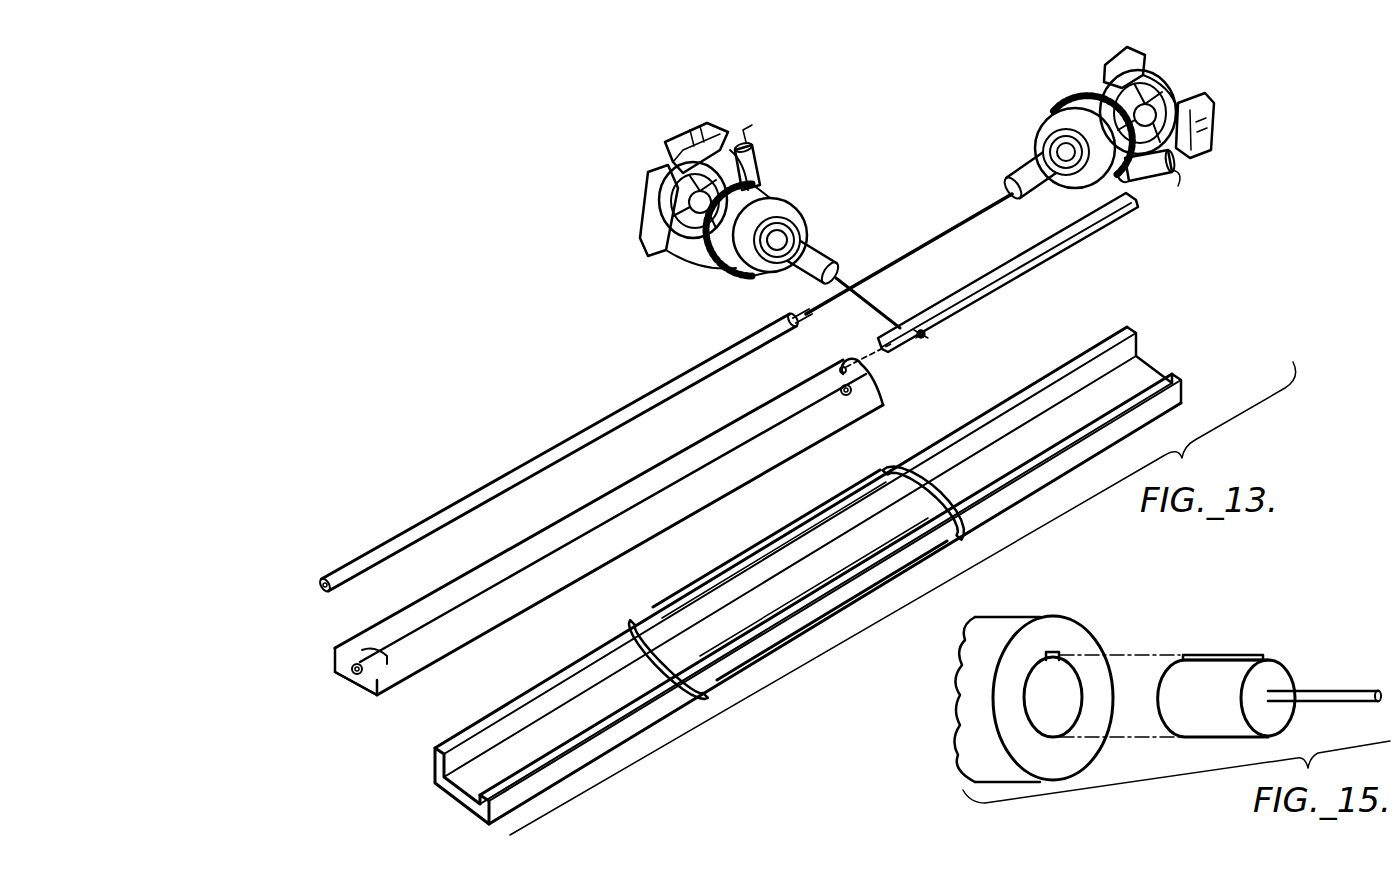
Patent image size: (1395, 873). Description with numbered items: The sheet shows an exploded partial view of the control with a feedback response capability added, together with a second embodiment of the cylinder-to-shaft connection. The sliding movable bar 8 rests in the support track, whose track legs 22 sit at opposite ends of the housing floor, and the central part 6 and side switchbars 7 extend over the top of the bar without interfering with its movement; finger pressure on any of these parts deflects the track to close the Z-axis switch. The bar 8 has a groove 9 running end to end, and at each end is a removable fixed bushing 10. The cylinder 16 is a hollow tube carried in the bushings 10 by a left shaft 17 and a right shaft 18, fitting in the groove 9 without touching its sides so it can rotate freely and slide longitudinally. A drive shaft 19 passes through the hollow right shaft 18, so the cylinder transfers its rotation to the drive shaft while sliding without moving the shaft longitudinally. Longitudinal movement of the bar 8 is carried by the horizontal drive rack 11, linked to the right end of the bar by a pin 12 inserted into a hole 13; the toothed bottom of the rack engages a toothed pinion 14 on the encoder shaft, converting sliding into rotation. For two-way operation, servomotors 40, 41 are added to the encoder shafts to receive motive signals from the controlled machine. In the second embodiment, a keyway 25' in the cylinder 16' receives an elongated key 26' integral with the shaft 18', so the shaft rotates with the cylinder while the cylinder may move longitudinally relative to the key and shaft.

In FIG. 13, the central part 6 is at (775, 548).
In FIG. 13, the side switchbar 7 is at (897, 470).
In FIG. 13, the sliding movable bar 8 is at (338, 667).
In FIG. 13, the groove 9 is at (465, 612).
In FIG. 13, the removable fixed bushing 10 is at (356, 676).
In FIG. 13, the horizontal drive rack 11 is at (1040, 282).
In FIG. 13, the pin 12 is at (890, 345).
In FIG. 13, the hole 13 is at (845, 366).
In FIG. 13, the toothed pinion 14 is at (922, 336).
In FIG. 13, the cylinder 16 is at (559, 452).
In FIG. 13, the left shaft 17 is at (314, 592).
In FIG. 13, the right shaft 18 is at (773, 307).
In FIG. 13, the drive shaft 19 is at (916, 250).
In FIG. 15, the drive shaft 19 is at (1337, 688).
In FIG. 13, the track leg 22 is at (1190, 405).
In FIG. 13, the servomotor 40 is at (748, 138).
In FIG. 13, the servomotor 41 is at (1110, 60).
In FIG. 15, the cylinder 16' is at (1066, 698).
In FIG. 15, the shaft 18' is at (1252, 683).
In FIG. 15, the keyway 25' is at (1115, 662).
In FIG. 15, the elongated key 26' is at (1232, 637).